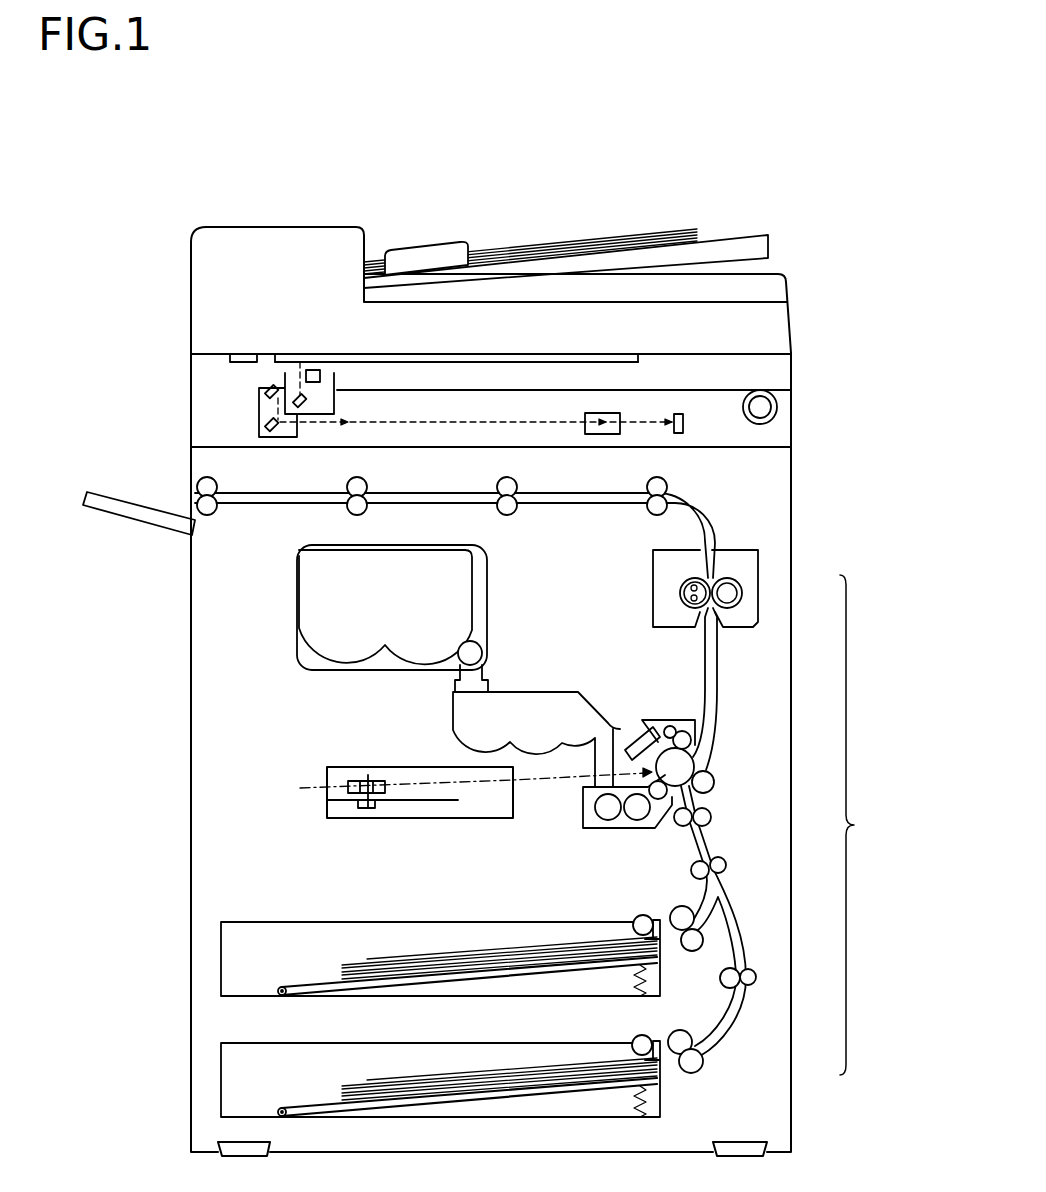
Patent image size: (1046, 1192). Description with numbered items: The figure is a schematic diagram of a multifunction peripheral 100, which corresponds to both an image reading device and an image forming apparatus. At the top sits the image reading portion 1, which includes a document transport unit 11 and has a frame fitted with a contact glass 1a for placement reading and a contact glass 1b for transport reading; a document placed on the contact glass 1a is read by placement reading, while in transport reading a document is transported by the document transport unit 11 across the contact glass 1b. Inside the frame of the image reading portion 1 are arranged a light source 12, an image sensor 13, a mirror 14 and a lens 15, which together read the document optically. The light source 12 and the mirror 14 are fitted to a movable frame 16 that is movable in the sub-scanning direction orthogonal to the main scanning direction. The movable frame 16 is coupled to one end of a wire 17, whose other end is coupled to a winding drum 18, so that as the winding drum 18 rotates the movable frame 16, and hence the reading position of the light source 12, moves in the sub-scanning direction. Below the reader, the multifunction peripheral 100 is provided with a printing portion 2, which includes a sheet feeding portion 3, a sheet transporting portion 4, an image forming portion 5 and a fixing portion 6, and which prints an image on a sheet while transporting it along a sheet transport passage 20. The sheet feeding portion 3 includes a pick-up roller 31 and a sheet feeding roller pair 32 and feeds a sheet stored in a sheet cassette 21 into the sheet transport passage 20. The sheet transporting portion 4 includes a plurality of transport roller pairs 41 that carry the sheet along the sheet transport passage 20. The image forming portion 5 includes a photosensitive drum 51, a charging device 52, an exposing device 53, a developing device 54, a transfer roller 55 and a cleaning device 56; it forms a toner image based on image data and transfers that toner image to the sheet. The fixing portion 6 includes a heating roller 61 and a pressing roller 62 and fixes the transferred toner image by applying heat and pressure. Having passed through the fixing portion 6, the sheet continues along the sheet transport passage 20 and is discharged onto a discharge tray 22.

The multifunction peripheral 100 is at (200, 221).
The image reading portion 1 is at (191, 409).
The contact glass for placement reading 1a is at (322, 358).
The contact glass for transport reading 1b is at (241, 352).
The document transport unit 11 is at (191, 297).
The light source 12 is at (322, 376).
The image sensor 13 is at (676, 414).
The mirror 14 is at (266, 390).
The lens 15 is at (588, 413).
The movable frame 16 is at (259, 407).
The wire 17 is at (490, 390).
The winding drum 18 is at (746, 413).
The printing portion 2 is at (858, 825).
The sheet transport passage 20 is at (578, 505).
The sheet cassette 21 is at (268, 922).
The discharge tray 22 is at (140, 515).
The sheet feeding portion 3 is at (708, 1063).
The pick-up roller 31 is at (647, 915).
The sheet feeding roller pair 32 is at (690, 952).
The sheet transporting portion 4 is at (760, 970).
The transport roller pair 41 is at (214, 510).
The image forming portion 5 is at (714, 770).
The photosensitive drum 51 is at (655, 722).
The charging device 52 is at (635, 738).
The exposing device 53 is at (327, 787).
The developing device 54 is at (583, 800).
The transfer roller 55 is at (716, 784).
The cleaning device 56 is at (683, 730).
The fixing portion 6 is at (762, 595).
The heating roller 61 is at (680, 592).
The pressing roller 62 is at (727, 578).